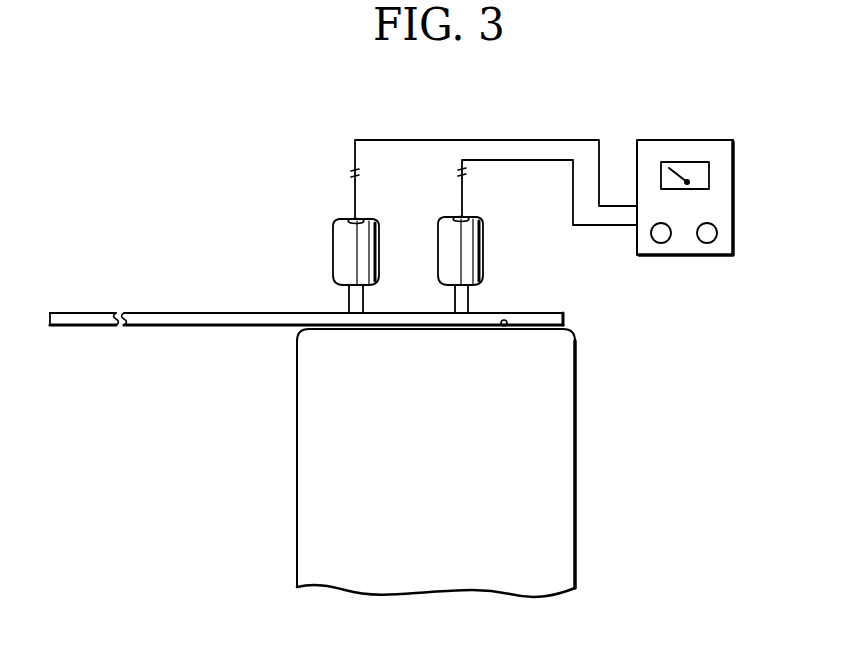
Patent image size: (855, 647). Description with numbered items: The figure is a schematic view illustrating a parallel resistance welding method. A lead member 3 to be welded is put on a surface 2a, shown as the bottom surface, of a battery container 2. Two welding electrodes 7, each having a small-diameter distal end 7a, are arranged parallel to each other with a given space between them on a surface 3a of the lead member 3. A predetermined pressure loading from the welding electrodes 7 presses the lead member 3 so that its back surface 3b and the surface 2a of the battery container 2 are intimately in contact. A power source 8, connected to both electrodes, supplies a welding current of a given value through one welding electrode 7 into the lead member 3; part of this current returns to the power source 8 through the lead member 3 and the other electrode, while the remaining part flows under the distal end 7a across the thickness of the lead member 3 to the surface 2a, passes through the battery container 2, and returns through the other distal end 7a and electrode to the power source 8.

The battery container 2 is at (548, 467).
The surface of battery container 2a is at (506, 325).
The lead member 3 is at (365, 327).
The surface of lead member 3a is at (165, 311).
The back surface of lead member 3b is at (165, 332).
The welding electrode 7 is at (333, 231).
The small-diameter distal end 7a is at (352, 303).
The power source 8 is at (697, 140).